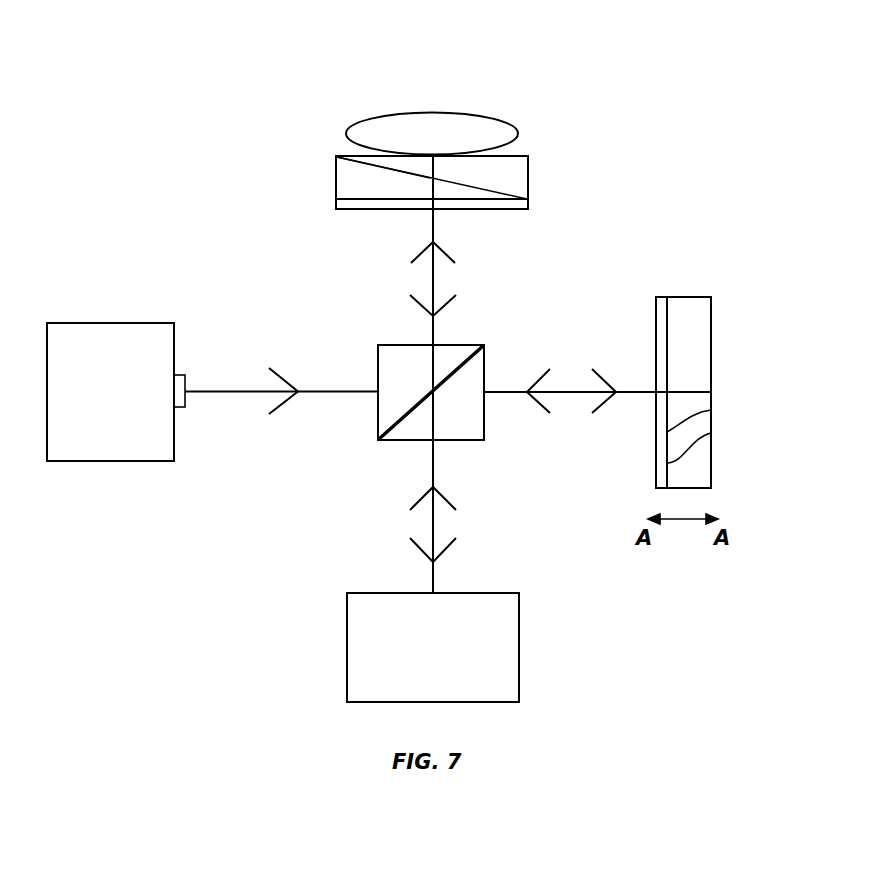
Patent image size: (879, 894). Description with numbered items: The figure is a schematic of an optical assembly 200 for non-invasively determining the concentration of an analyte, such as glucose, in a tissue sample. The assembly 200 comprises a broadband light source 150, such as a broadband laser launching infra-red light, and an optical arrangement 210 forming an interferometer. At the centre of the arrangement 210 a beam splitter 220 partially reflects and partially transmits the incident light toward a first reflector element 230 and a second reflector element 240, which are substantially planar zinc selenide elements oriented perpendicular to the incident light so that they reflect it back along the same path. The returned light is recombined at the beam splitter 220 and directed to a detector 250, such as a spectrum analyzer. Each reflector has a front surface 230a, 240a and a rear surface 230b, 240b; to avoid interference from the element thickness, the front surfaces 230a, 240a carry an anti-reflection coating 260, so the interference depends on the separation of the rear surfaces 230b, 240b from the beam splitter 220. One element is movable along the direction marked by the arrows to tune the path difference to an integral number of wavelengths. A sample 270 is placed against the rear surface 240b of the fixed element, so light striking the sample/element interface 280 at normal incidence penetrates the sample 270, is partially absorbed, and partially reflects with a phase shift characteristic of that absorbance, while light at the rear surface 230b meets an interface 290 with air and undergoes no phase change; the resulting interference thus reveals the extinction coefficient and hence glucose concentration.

The optical assembly 200 is at (330, 48).
The broadband light source 150 is at (116, 392).
The beam splitter 220 is at (460, 434).
The detector 250 is at (433, 647).
The sample 270 is at (432, 122).
The second reflector element 240 is at (523, 177).
The front surface of second reflector element 240a is at (480, 194).
The rear surface of second reflector element 240b is at (520, 155).
The sample/element interface 280 is at (422, 158).
The anti-reflection coating 260 is at (398, 213).
The optical arrangement 210 is at (554, 263).
The first reflector element 230 is at (685, 305).
The front surface of first reflector element 230a is at (711, 433).
The rear surface of first reflector element 230b is at (712, 335).
The interface with air 290 is at (667, 432).